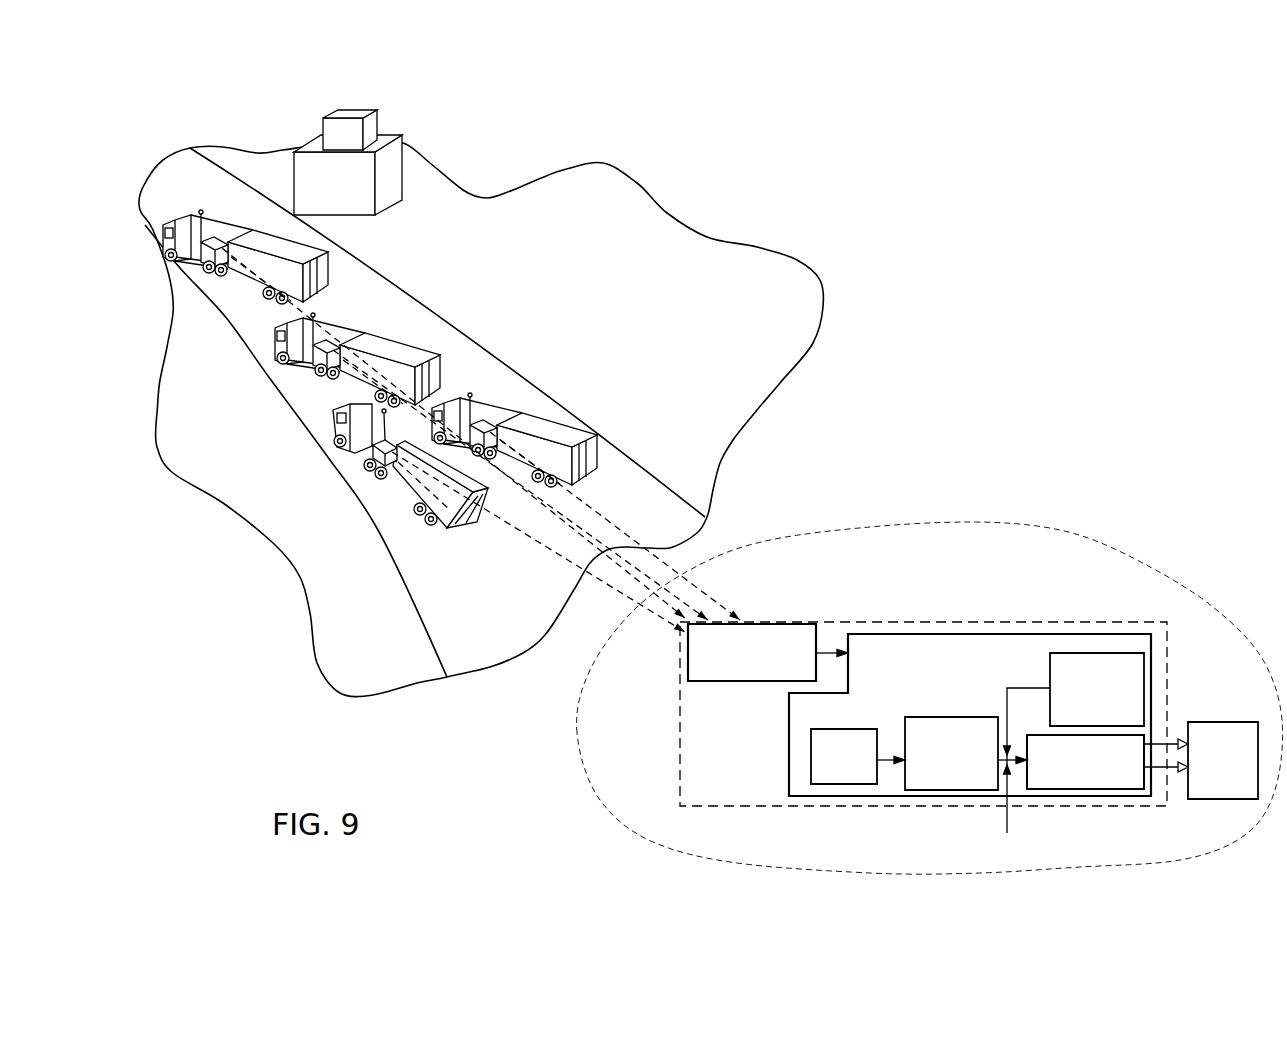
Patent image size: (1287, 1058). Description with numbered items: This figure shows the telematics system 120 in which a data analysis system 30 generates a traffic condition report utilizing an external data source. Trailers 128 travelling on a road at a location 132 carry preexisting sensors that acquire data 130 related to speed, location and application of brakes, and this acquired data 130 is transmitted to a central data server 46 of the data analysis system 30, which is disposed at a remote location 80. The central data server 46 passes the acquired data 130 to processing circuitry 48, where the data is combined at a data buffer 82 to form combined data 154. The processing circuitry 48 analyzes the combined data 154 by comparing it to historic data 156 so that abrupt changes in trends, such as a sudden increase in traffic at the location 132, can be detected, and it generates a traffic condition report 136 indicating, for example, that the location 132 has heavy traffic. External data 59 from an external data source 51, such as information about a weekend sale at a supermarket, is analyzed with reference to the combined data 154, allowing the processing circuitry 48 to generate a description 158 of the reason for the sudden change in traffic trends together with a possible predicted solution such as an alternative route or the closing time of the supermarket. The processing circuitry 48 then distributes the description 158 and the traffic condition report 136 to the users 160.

The telematics system 120 is at (1118, 195).
The description 158 is at (386, 191).
The trailer 128 is at (317, 242).
The acquired data 130 is at (452, 394).
The location 132 is at (243, 503).
The remote location 80 is at (610, 717).
The central data server 46 is at (680, 662).
The data analysis system 30 is at (1067, 622).
The processing circuitry 48 is at (913, 634).
The data buffer 82 is at (811, 757).
The combined data 154 is at (887, 745).
The traffic condition report 136 is at (903, 773).
The external data source 51 is at (1125, 653).
The external data 59 is at (1020, 688).
The historic data 156 is at (1005, 822).
The users 160 is at (1223, 722).